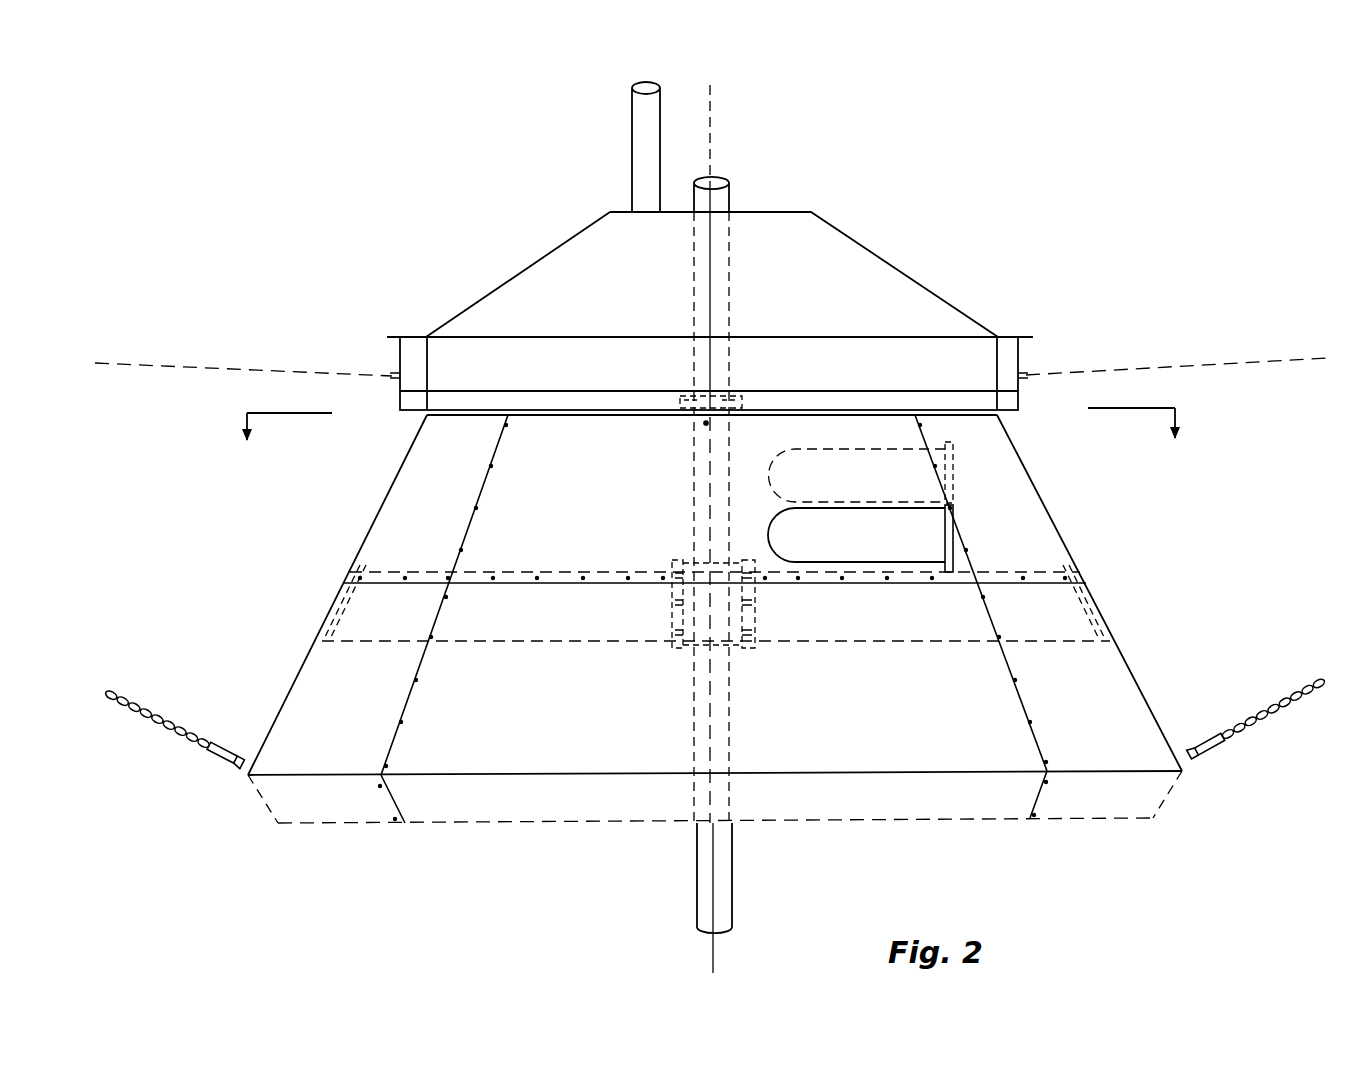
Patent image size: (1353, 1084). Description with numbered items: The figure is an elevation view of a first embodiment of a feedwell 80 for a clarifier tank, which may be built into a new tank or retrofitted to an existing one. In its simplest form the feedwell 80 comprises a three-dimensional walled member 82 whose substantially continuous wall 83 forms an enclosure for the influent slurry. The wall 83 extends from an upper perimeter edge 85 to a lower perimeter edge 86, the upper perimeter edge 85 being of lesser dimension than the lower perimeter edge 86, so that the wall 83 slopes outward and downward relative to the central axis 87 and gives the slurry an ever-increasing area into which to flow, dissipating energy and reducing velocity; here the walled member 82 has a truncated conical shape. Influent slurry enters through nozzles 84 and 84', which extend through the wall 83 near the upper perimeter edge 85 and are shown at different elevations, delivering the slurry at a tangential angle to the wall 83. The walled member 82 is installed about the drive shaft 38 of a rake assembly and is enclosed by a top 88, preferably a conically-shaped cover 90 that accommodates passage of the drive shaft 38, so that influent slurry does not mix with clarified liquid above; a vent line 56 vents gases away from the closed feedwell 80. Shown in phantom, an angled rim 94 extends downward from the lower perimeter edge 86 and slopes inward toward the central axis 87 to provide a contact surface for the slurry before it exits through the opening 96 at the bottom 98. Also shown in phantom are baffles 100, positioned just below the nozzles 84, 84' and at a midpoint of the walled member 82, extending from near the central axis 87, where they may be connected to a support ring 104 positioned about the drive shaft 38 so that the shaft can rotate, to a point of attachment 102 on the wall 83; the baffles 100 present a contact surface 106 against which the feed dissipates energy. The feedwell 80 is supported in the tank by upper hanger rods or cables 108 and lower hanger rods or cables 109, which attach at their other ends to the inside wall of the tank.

The feedwell 80 is at (308, 230).
The vent line 56 is at (632, 115).
The central axis 87 is at (710, 130).
The top 88 is at (920, 192).
The conically-shaped cover 90 is at (945, 295).
The drive shaft 38 is at (722, 265).
The upper hanger rods or cables 108 is at (192, 362).
The three-dimensional walled member 82 is at (366, 500).
The upper perimeter edge 85 is at (975, 416).
The nozzle 84' is at (934, 472).
The nozzle 84 is at (939, 536).
The point of attachment 102 is at (324, 605).
The contact surface 106 is at (716, 619).
The substantially continuous wall 83 is at (1120, 708).
The lower hanger rods or cables 109 is at (178, 727).
The baffles 100 is at (533, 617).
The support ring 104 is at (746, 652).
The angled rim 94 is at (263, 803).
The opening 96 is at (591, 790).
The bottom 98 is at (497, 835).
The lower perimeter edge 86 is at (1132, 772).